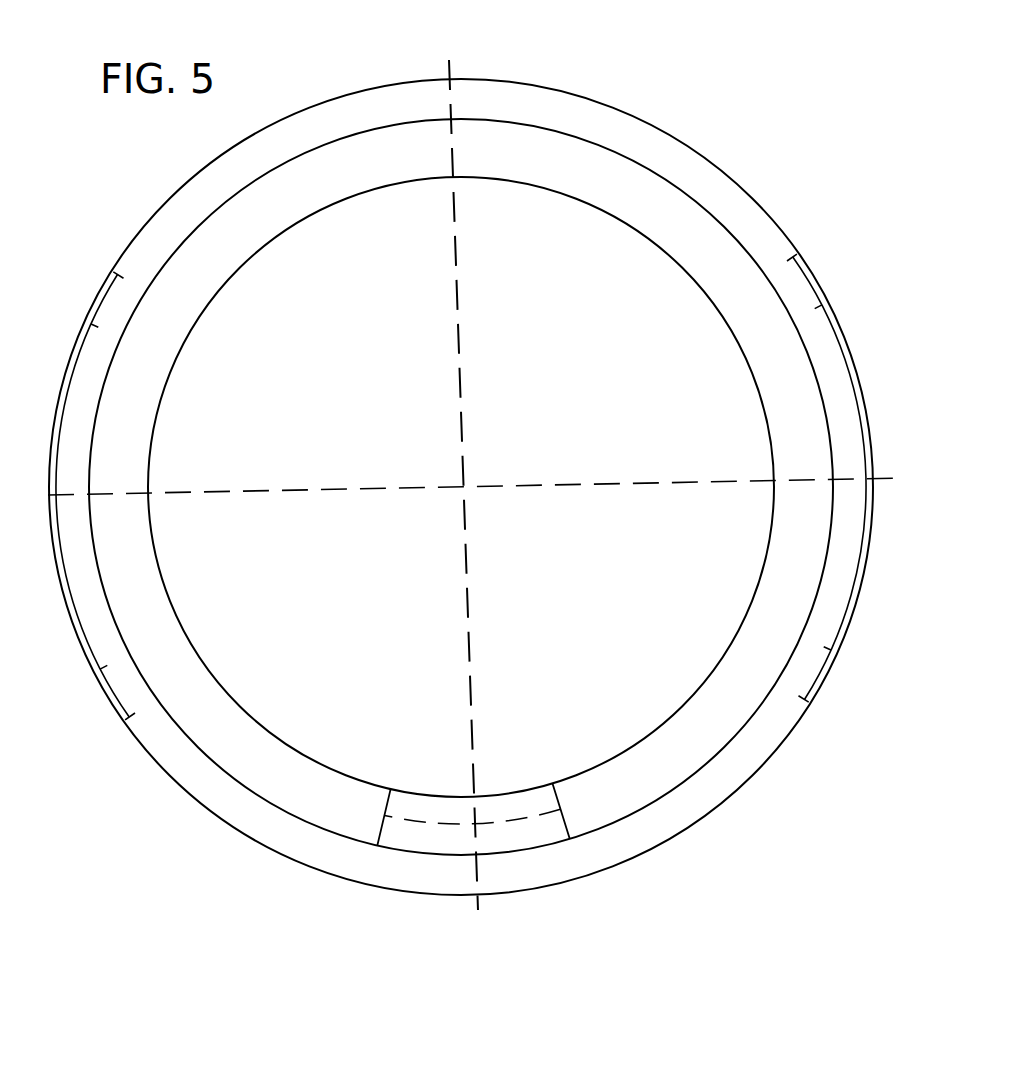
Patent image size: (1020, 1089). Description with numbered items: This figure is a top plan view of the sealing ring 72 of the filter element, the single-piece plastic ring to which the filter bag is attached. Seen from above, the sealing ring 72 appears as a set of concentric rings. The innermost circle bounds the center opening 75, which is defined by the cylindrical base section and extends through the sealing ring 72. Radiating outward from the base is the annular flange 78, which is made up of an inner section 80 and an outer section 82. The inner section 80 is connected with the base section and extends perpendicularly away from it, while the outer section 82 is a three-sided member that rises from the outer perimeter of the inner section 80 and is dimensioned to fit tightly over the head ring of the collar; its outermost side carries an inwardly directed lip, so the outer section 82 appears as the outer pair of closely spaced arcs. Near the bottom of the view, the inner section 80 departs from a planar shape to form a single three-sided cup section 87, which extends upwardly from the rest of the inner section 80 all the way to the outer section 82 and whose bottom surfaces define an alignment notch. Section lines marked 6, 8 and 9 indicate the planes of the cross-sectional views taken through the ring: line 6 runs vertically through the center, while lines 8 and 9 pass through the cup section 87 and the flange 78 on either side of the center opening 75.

The sealing ring 72 is at (708, 116).
The center opening 75 is at (618, 385).
The annular flange 78 is at (720, 665).
The inner section 80 is at (143, 437).
The outer section 82 is at (180, 203).
The cup section 87 is at (517, 806).
The section line 6- 6 is at (370, 15).
The section line 8- 8 is at (328, 898).
The section line 9- 9 is at (342, 570).